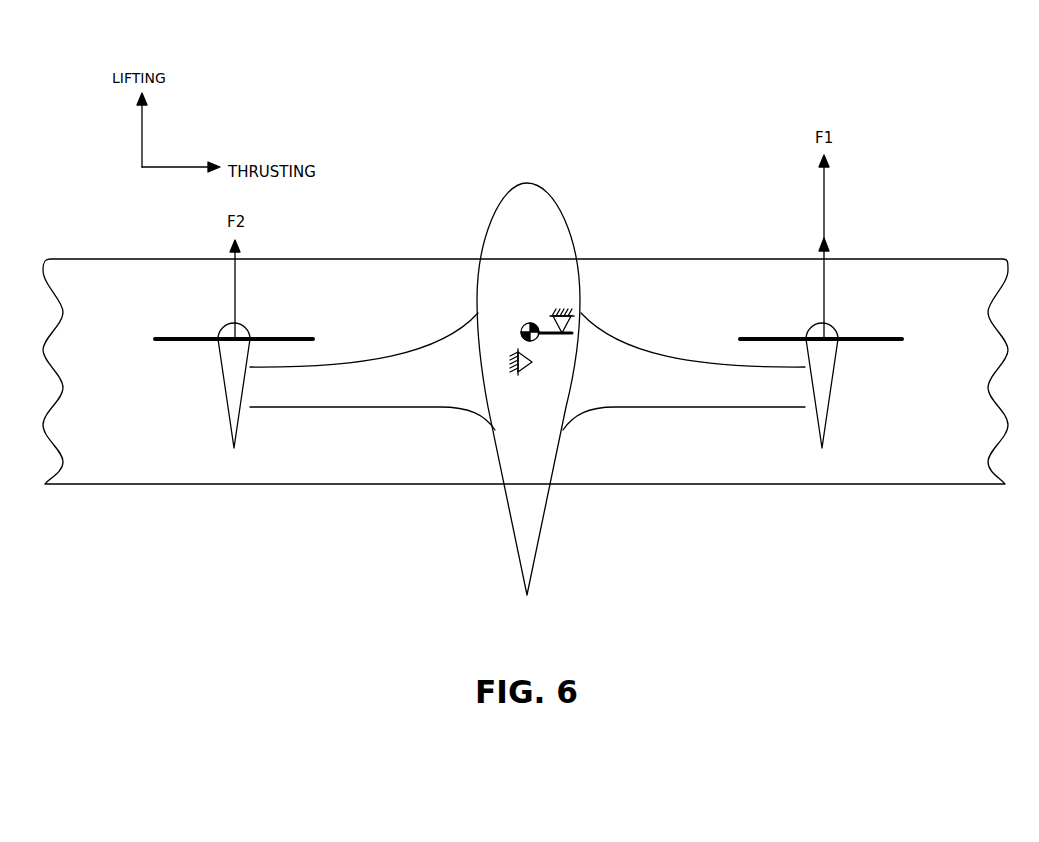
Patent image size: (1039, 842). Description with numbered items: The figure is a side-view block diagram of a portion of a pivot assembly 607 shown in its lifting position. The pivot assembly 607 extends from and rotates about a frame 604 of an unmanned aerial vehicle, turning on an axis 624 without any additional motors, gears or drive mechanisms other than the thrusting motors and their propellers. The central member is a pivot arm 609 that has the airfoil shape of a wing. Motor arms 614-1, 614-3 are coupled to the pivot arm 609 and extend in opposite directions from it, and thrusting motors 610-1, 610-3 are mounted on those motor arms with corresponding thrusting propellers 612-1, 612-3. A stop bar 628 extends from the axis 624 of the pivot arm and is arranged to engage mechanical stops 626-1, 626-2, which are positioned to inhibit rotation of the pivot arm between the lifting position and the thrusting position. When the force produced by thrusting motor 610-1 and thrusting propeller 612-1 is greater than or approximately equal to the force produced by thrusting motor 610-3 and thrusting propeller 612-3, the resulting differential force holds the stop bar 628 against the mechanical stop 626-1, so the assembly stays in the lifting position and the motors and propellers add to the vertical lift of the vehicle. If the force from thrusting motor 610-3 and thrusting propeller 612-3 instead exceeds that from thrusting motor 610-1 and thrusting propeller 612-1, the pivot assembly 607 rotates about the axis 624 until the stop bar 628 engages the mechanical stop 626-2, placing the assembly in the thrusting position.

The frame 604 is at (895, 455).
The pivot assembly 607 is at (767, 101).
The pivot arm 609 is at (547, 207).
The thrusting motor 610-1 is at (830, 324).
The thrusting motor 610-3 is at (242, 323).
The thrusting propeller 612-1 is at (890, 333).
The thrusting propeller 612-3 is at (305, 336).
The motor arm 614-1 is at (690, 392).
The motor arm 614-3 is at (345, 392).
The axis 624 is at (530, 323).
The mechanical stop 626-1 is at (563, 314).
The mechanical stop 626-2 is at (522, 376).
The stop bar 628 is at (582, 315).